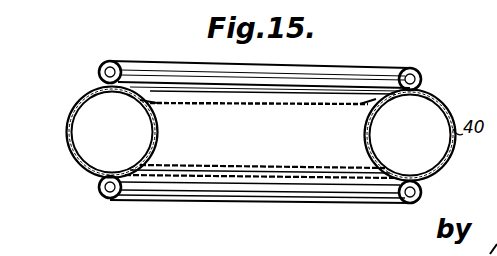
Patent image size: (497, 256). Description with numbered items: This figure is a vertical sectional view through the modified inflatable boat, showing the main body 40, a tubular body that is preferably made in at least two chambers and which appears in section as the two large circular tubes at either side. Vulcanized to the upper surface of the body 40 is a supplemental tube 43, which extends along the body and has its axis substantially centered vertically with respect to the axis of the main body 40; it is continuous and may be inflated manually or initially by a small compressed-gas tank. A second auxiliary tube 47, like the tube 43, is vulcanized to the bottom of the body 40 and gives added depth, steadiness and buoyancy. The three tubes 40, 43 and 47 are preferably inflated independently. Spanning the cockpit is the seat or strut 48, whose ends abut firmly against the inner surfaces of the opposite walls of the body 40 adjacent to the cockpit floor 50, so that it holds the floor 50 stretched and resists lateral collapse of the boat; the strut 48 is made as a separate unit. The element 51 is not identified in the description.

The main body 40 is at (68, 130).
The supplemental tube 43 is at (383, 67).
The second auxiliary tube 47 is at (151, 199).
The seat or strut 48 is at (197, 95).
The cockpit floor 50 is at (378, 180).
The intermediate belt run 51 is at (226, 167).